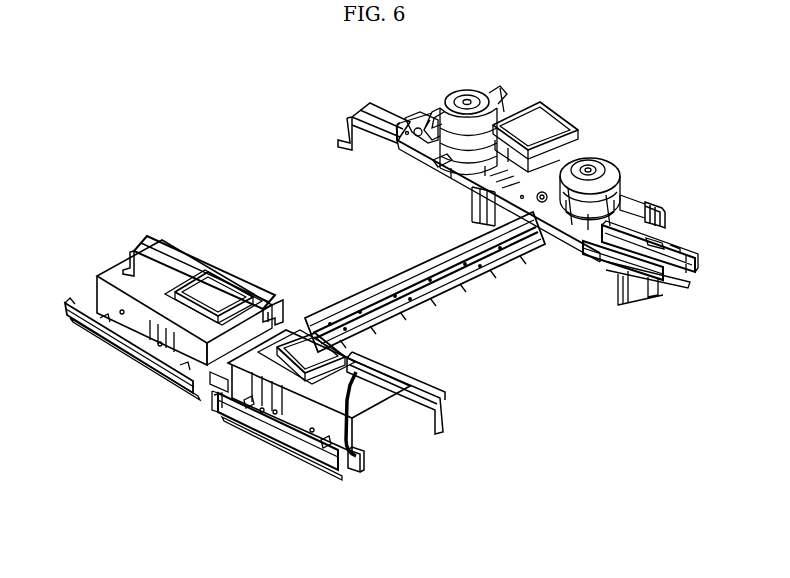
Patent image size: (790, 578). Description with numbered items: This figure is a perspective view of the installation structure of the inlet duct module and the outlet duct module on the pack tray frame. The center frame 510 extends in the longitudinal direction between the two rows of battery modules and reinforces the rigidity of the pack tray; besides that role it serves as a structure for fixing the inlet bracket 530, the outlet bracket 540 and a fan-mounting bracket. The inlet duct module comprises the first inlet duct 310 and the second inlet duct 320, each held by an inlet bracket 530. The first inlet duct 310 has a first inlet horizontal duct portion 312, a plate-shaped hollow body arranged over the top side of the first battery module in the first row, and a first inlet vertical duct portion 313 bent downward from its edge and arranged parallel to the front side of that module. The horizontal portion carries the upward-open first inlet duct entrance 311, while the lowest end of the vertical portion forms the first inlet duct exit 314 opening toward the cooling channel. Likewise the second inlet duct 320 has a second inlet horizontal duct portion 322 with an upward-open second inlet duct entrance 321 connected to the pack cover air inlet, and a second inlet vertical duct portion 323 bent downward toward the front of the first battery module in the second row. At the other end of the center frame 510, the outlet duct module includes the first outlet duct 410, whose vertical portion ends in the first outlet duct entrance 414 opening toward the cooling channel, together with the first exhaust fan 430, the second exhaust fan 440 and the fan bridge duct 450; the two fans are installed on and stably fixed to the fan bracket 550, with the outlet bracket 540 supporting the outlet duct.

The first inlet duct 310 is at (352, 425).
The first inlet duct entrance 311 is at (340, 394).
The first inlet horizontal duct portion 312 is at (338, 397).
The first inlet vertical duct portion 313 is at (357, 430).
The first inlet duct exit 314 is at (362, 470).
The second inlet duct 320 is at (162, 293).
The second inlet duct entrance 321 is at (197, 264).
The second inlet horizontal duct portion 322 is at (128, 284).
The second inlet vertical duct portion 323 is at (99, 298).
The first outlet duct 410 is at (694, 229).
The first outlet duct entrance 414 is at (677, 277).
The first exhaust fan 430 is at (598, 155).
The second exhaust fan 440 is at (471, 91).
The fan bridge duct 450 is at (548, 112).
The center frame 510 is at (387, 278).
The inlet bracket 530 is at (176, 250).
The outlet bracket 540 is at (362, 111).
The fan bracket 550 is at (647, 198).